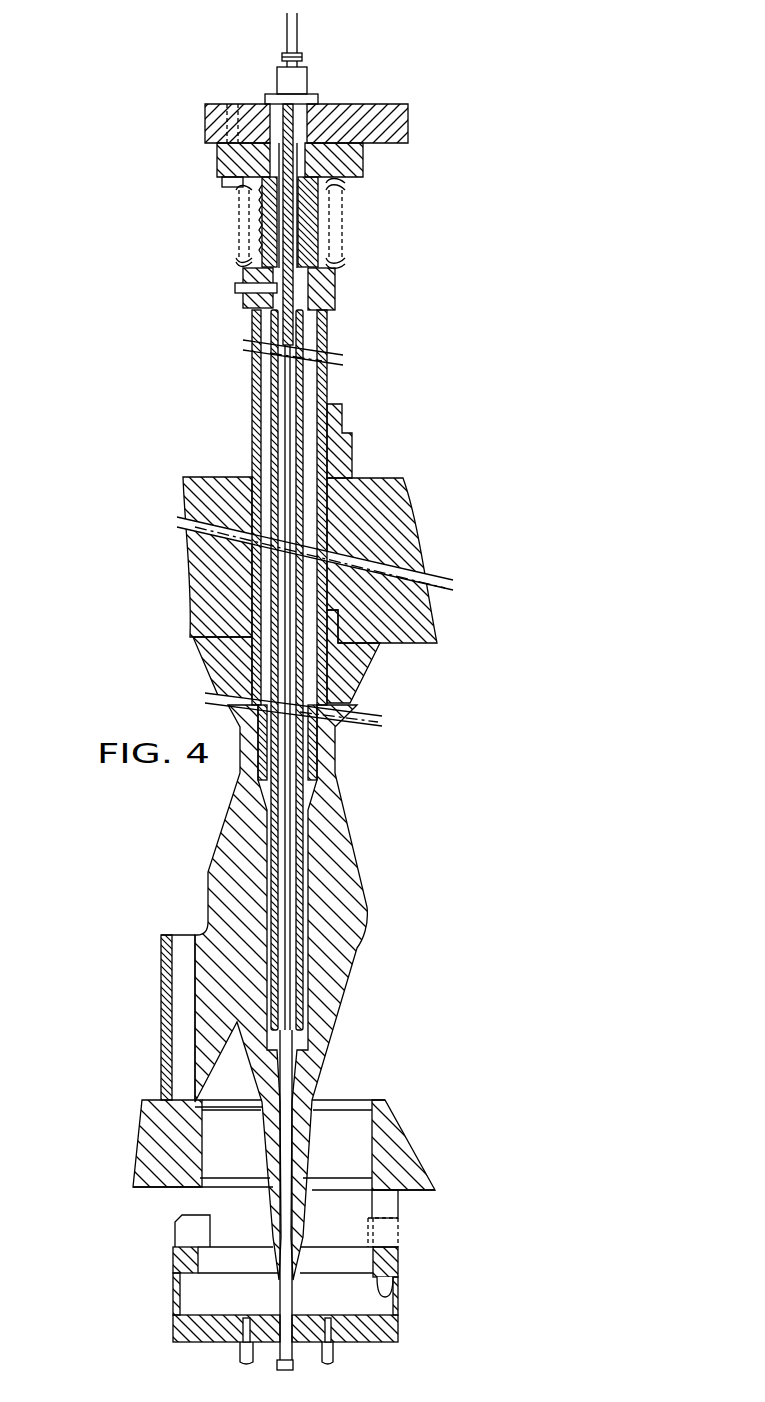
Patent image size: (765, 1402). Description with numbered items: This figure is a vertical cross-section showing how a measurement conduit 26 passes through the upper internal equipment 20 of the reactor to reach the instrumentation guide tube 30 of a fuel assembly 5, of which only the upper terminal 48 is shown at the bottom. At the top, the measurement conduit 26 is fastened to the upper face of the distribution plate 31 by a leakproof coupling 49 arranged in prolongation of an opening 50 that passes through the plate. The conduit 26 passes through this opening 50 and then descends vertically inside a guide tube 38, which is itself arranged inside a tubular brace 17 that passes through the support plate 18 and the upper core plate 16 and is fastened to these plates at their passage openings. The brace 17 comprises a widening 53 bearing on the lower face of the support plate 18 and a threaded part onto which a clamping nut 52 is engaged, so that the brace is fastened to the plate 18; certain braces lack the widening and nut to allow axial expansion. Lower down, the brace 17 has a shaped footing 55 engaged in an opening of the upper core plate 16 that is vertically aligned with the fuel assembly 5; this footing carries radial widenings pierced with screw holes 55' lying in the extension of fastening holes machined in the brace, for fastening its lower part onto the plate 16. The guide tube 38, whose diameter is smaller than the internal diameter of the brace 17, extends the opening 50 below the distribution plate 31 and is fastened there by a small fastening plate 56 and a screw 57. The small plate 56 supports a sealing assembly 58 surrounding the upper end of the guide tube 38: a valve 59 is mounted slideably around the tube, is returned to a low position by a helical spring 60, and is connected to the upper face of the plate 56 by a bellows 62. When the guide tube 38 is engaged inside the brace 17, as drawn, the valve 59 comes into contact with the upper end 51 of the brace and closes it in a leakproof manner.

The measurement conduit 26 is at (287, 31).
The leakproof coupling 49 is at (300, 79).
The opening 50 is at (303, 123).
The distribution plate 31 is at (383, 118).
The small fastening plate 56 is at (352, 160).
The sealing assembly 58 is at (470, 160).
The screw 57 is at (225, 182).
The bellows 62 is at (240, 226).
The helical spring 60 is at (318, 222).
The valve 59 is at (325, 297).
The upper end 51 is at (250, 311).
The guide tube 38 is at (303, 399).
The clamping nut 52 is at (340, 448).
The support plate 18 is at (400, 530).
The internal equipment 20 is at (473, 625).
The widening 53 is at (362, 658).
The tubular brace 17 is at (327, 740).
The shaped footing 55 is at (309, 992).
The screw holes 55' is at (141, 994).
The upper core plate 16 is at (405, 1146).
The upper terminal 48 is at (399, 1296).
The fuel assembly 5 is at (411, 1338).
The instrumentation guide tube 30 is at (294, 1364).